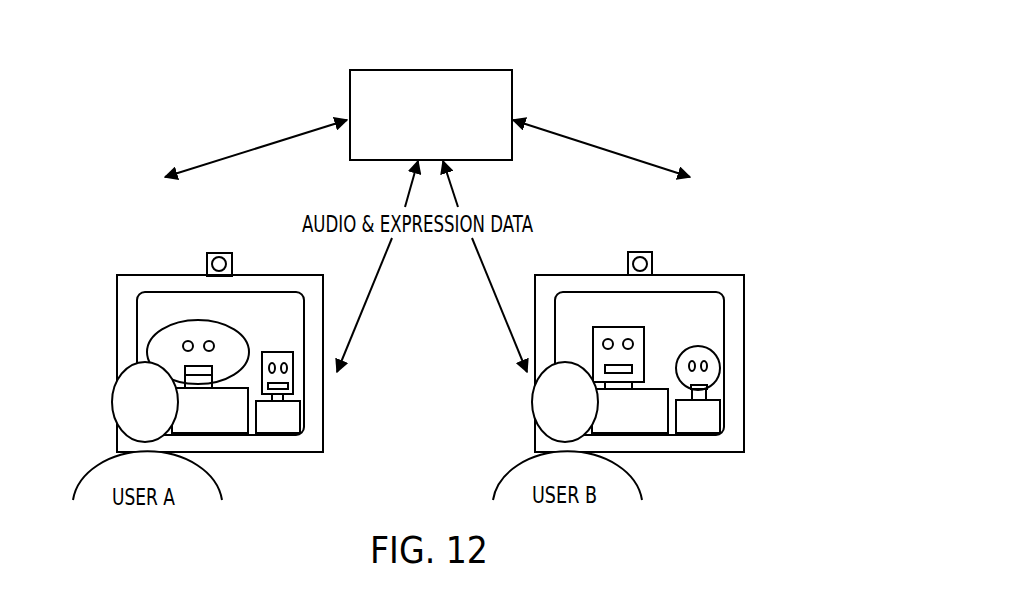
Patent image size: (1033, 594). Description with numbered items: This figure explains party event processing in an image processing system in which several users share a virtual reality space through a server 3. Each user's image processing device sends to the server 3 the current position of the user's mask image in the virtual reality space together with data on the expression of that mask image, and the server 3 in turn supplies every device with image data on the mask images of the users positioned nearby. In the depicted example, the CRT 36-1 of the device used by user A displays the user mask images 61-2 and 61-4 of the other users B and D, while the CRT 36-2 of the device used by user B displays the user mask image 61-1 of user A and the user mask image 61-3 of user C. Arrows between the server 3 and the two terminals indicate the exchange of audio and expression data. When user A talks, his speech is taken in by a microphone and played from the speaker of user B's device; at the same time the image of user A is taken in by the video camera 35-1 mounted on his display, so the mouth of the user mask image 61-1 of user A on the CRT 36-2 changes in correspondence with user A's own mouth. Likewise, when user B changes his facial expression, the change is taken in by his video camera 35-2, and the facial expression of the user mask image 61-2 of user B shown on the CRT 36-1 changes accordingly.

The server 3 is at (427, 70).
The video camera 35-1 is at (221, 252).
The video camera 35-2 is at (641, 251).
The CRT 36-1 is at (266, 453).
The CRT 36-2 is at (684, 453).
The user mask image 61-1 is at (644, 338).
The user mask image 61-2 is at (160, 325).
The user mask image 61-3 is at (720, 369).
The user mask image 61-4 is at (293, 373).